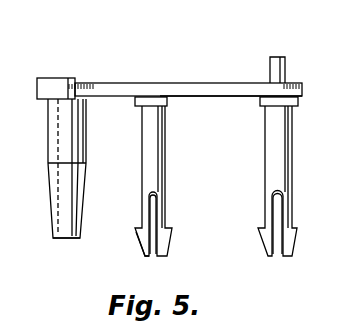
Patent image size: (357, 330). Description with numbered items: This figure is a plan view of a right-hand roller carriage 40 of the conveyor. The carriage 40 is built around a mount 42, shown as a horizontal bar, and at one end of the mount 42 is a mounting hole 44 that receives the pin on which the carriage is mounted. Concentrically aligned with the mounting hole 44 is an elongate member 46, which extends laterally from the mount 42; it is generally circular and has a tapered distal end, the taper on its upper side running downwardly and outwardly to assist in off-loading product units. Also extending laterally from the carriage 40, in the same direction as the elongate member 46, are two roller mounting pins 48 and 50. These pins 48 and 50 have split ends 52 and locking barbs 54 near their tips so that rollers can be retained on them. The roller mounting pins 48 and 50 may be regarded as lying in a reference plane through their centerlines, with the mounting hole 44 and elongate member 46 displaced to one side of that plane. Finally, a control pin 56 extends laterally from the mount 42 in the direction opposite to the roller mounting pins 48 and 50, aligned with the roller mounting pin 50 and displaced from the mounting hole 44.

The roller carriage 40 is at (117, 83).
The mount 42 is at (205, 83).
The mounting hole 44 is at (58, 95).
The elongate member 46 is at (47, 128).
The roller mounting pin 48 is at (166, 134).
The roller mounting pin 50 is at (292, 143).
The split ends 52 is at (153, 258).
The locking barbs 54 is at (168, 230).
The control pin 56 is at (283, 57).